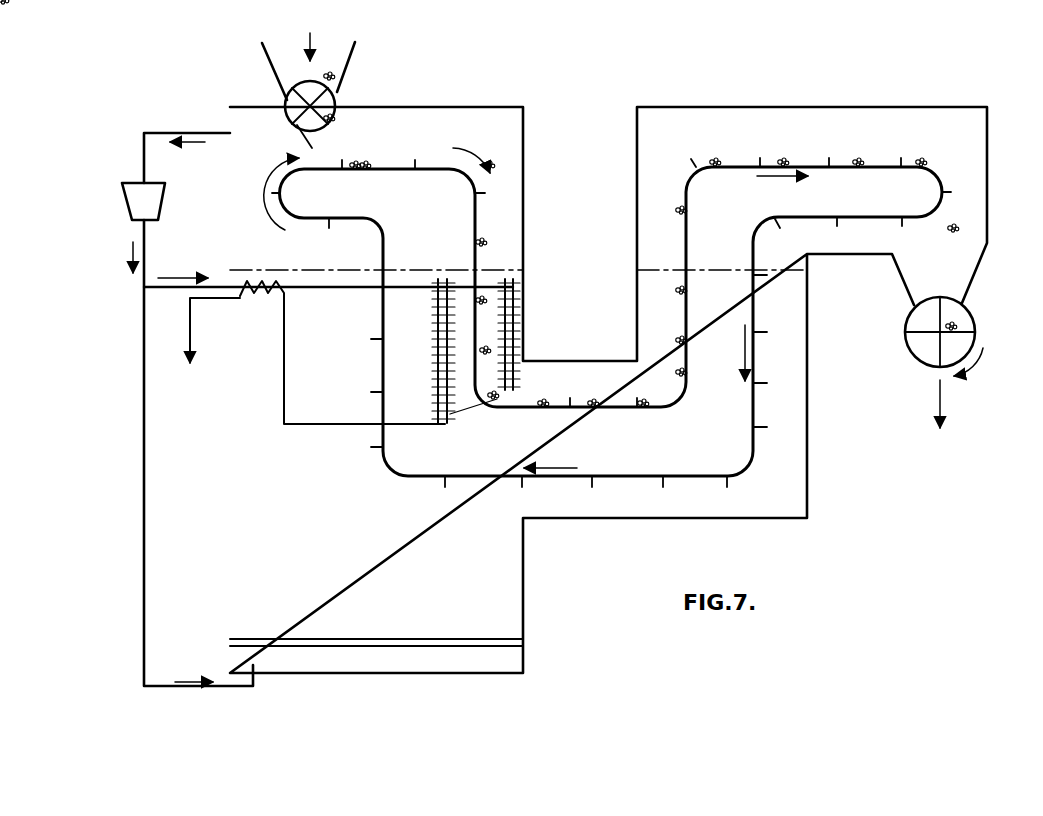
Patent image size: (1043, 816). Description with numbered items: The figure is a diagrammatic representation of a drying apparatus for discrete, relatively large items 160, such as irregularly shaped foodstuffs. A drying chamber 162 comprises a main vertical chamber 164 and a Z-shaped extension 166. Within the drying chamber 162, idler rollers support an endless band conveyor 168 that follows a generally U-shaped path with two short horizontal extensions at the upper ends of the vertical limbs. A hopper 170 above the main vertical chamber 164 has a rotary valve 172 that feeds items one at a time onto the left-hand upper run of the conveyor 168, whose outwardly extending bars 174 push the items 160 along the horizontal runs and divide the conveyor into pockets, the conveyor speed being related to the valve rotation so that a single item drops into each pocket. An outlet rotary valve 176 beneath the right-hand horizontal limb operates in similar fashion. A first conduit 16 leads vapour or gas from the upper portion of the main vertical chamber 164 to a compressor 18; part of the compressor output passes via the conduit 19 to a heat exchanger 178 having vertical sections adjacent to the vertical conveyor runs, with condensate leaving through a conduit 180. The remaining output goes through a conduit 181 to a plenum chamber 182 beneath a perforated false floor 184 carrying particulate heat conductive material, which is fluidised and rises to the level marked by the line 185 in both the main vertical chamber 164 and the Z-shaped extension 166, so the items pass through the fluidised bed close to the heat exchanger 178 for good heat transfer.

The first conduit 16 is at (173, 131).
The compressor 18 is at (133, 202).
The conduit 19 is at (220, 285).
The items 160 is at (343, 70).
The drying chamber 162 is at (497, 104).
The main vertical chamber 164 is at (240, 501).
The Z-shaped extension 166 is at (917, 112).
The endless band conveyor 168 is at (353, 218).
The hopper 170 is at (268, 72).
The rotary valve 172 is at (297, 126).
The outwardly extending bars 174 is at (420, 158).
The outlet rotary valve 176 is at (957, 338).
The heat exchanger 178 is at (507, 342).
The conduit 180 is at (192, 350).
The conduit 181 is at (145, 603).
The plenum chamber 182 is at (336, 657).
The perforated false floor 184 is at (423, 640).
The line 185 is at (403, 268).